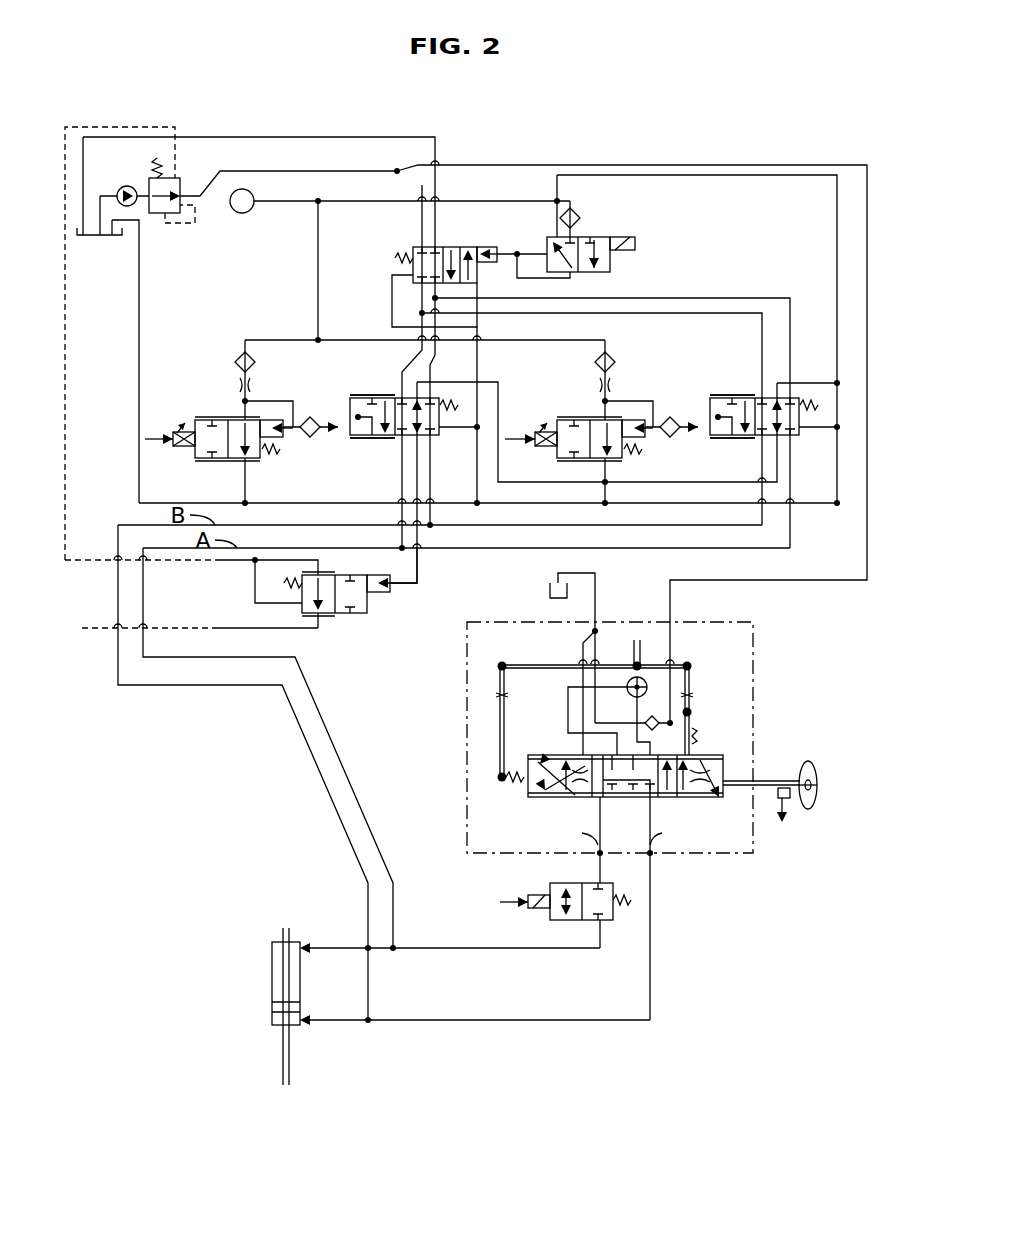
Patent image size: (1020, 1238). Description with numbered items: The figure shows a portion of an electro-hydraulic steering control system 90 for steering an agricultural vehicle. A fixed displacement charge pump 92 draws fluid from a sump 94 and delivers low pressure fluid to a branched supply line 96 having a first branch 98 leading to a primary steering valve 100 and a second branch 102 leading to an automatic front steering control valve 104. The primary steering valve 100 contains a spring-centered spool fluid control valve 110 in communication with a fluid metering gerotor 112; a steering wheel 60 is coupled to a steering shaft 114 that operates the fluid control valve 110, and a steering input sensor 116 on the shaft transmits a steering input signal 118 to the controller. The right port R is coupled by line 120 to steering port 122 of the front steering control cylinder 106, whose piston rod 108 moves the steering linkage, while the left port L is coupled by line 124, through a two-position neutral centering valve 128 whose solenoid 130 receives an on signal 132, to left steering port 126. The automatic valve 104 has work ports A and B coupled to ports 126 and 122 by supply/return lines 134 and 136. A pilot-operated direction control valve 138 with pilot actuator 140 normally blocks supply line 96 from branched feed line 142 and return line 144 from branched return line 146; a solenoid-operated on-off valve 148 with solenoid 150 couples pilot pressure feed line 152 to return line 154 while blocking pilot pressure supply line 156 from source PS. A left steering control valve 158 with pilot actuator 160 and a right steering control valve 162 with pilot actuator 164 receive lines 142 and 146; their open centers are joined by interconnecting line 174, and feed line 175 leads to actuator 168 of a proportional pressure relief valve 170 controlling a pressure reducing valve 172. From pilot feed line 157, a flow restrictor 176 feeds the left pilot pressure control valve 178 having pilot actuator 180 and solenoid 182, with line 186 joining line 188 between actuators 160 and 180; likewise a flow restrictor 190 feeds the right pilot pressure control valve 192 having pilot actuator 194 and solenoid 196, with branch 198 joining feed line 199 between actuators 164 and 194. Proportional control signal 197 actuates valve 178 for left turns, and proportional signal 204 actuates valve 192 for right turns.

The steering wheel 60 is at (813, 765).
The electro-hydraulic steering control system 90 is at (215, 817).
The fixed displacement charge pump 92 is at (121, 186).
The sump 94 is at (90, 245).
The branched supply line 96 is at (300, 170).
The first branch 98 is at (532, 162).
The primary steering valve 100 is at (458, 732).
The second branch 102 is at (412, 188).
The automatic front steering control valve 104 is at (645, 92).
The front steering control cylinder 106 is at (271, 981).
The piston rod 108 is at (282, 1049).
The fluid control valve 110 is at (576, 754).
The fluid metering gerotor 112 is at (630, 693).
The steering shaft 114 is at (773, 782).
The steering input sensor 116 is at (789, 798).
The steering input signal 118 is at (772, 805).
The line 120 is at (653, 950).
The steering port 122 is at (296, 1027).
The line 124 is at (601, 876).
The left steering port 126 is at (297, 942).
The neutral centering valve 128 is at (583, 921).
The solenoid 130 is at (540, 893).
The steering centering 'on' signal 132 is at (497, 901).
The supply/return line 134 is at (260, 658).
The supply/return line 136 is at (215, 686).
The direction control valve 138 is at (413, 246).
The pilot actuator 140 is at (486, 246).
The branched fluid feed line 142 is at (612, 316).
The return line 144 is at (337, 137).
The branched fluid return line 146 is at (778, 297).
The solenoid-operated on-off valve 148 is at (600, 235).
The solenoid 150 is at (633, 251).
The pilot pressure feed line 152 is at (511, 252).
The return line 154 is at (742, 176).
The pilot pressure supply line 156 is at (268, 198).
The pilot-pressure feed line 157 is at (345, 339).
The left proportional pilot-operated steering control valve 158 is at (388, 448).
The pilot actuator 160 is at (338, 413).
The right proportional pilot-operated steering control valve 162 is at (755, 446).
The pilot actuator 164 is at (703, 400).
The pilot actuator 168 is at (373, 590).
The proportional pressure relief valve 170 is at (332, 628).
The pressure reducing valve 172 is at (180, 177).
The interconnecting line 174 is at (675, 483).
The pilot-pressure feed line 175 is at (420, 567).
The flow restrictor 176 is at (240, 383).
The left proportional solenoid-operated pilot pressure control valve 178 is at (217, 409).
The pilot actuator 180 is at (283, 439).
The solenoid 182 is at (178, 448).
The line 186 is at (297, 407).
The line 188 is at (312, 437).
The flow restrictor 190 is at (600, 385).
The right proportional solenoid-operated pilot pressure control valve 192 is at (586, 410).
The pilot actuator 194 is at (642, 440).
The solenoid 196 is at (540, 447).
The proportional control signal 197 is at (150, 437).
The branch 198 is at (653, 407).
The pilot pressure feed line 199 is at (677, 413).
The proportional electrical signal 204 is at (510, 437).